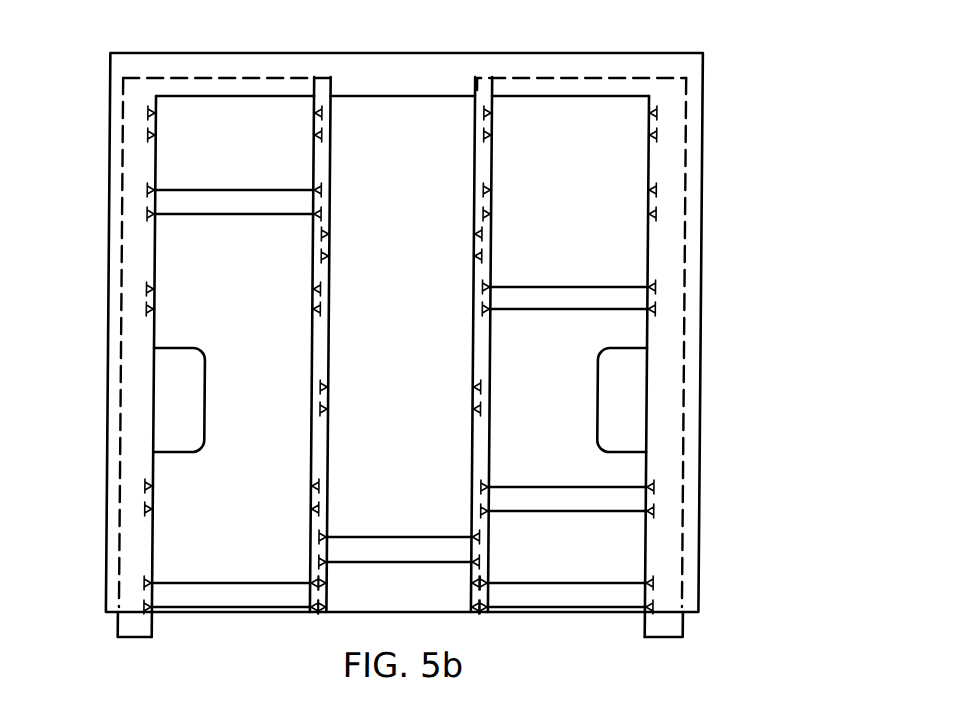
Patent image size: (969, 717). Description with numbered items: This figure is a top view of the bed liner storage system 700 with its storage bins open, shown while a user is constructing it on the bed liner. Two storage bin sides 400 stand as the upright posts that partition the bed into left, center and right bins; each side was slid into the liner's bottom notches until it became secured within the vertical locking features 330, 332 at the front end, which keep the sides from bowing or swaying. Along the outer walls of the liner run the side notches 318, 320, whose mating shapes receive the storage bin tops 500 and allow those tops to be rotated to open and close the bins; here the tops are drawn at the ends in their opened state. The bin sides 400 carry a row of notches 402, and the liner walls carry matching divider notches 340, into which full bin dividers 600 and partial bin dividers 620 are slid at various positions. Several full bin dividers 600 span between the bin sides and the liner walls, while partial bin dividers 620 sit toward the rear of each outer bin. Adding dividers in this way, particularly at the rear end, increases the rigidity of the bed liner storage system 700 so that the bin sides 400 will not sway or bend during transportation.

The bed liner storage system 700 is at (590, 30).
The vertical locking feature 332 is at (318, 77).
The vertical locking feature 330 is at (476, 77).
The side notch 320 is at (121, 187).
The side notch 318 is at (685, 341).
The divider notches 340 is at (150, 309).
The storage bin side 400 is at (320, 365).
The notches 402 is at (473, 238).
The full bin divider 600 is at (214, 207).
The partial bin divider 620 is at (180, 585).
The storage bin top 500 is at (133, 628).